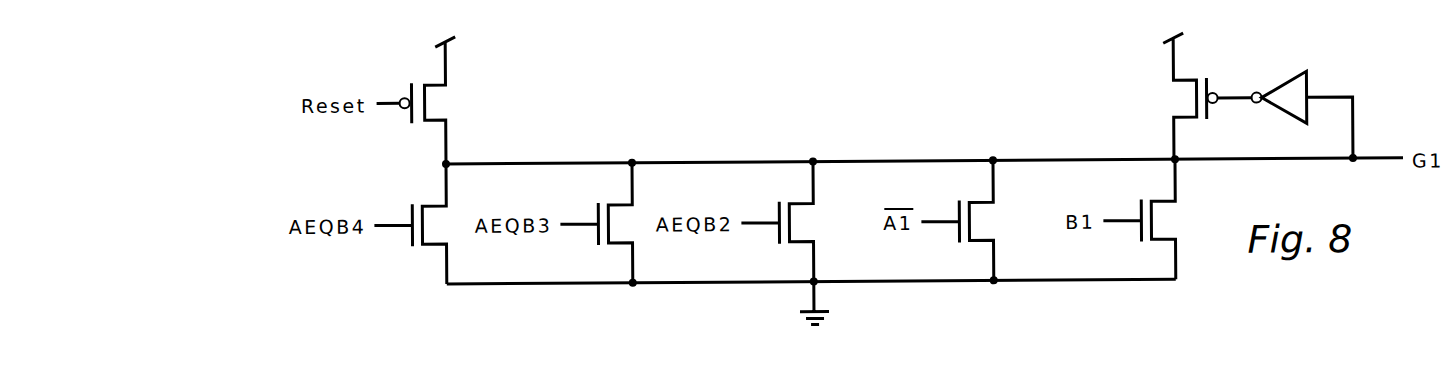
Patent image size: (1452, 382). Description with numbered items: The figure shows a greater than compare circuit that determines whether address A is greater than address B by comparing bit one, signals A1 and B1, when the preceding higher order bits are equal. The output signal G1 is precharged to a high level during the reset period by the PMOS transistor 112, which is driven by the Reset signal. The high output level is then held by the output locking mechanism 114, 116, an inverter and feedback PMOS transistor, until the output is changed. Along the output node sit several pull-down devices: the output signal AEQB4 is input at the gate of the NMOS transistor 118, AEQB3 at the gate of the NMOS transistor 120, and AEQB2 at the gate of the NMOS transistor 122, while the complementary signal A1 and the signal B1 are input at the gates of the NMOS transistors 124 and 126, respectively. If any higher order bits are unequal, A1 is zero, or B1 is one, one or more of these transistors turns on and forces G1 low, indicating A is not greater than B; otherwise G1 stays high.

The PMOS transistor 112 is at (427, 84).
The output locking mechanism 114 is at (1270, 117).
The output locking mechanism 116 is at (1184, 85).
The NMOS transistor 118 is at (433, 247).
The NMOS transistor 120 is at (619, 247).
The NMOS transistor 122 is at (800, 247).
The NMOS transistor 124 is at (980, 247).
The NMOS transistor 126 is at (1162, 247).